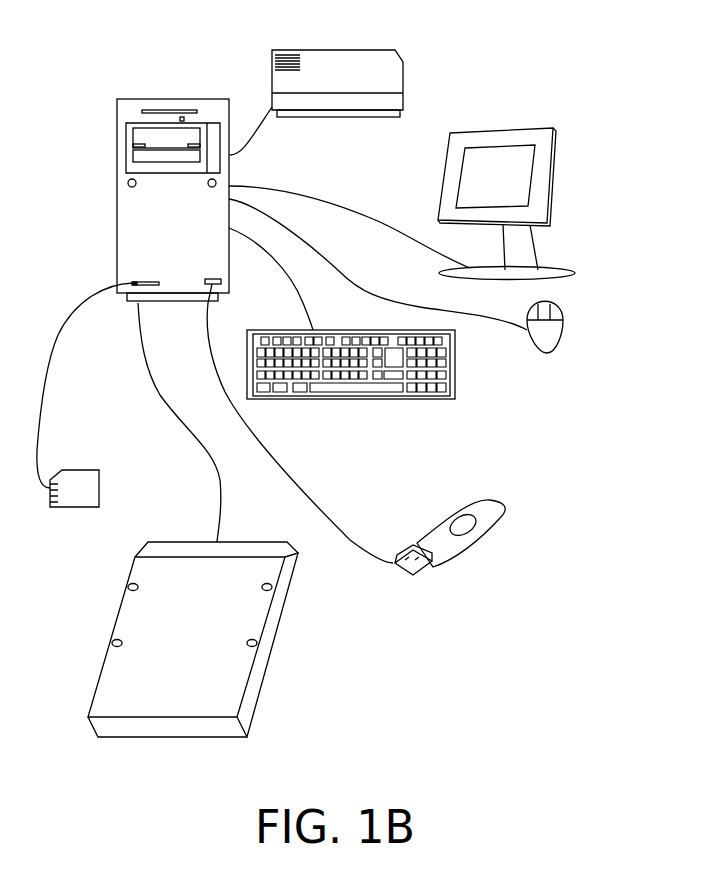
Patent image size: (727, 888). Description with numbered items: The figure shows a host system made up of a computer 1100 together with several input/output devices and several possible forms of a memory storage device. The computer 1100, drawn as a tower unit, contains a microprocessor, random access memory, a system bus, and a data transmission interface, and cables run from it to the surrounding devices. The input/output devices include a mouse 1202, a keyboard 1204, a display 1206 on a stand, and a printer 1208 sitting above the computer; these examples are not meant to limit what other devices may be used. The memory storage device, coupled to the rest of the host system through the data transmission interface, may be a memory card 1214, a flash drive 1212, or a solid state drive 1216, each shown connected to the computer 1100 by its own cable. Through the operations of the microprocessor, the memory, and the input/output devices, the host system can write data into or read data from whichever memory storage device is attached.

The computer 1100 is at (172, 97).
The mouse 1202 is at (562, 330).
The keyboard 1204 is at (455, 375).
The display 1206 is at (508, 130).
The printer 1208 is at (332, 50).
The flash drive 1212 is at (447, 527).
The memory card 1214 is at (99, 478).
The solid state drive 1216 is at (248, 525).